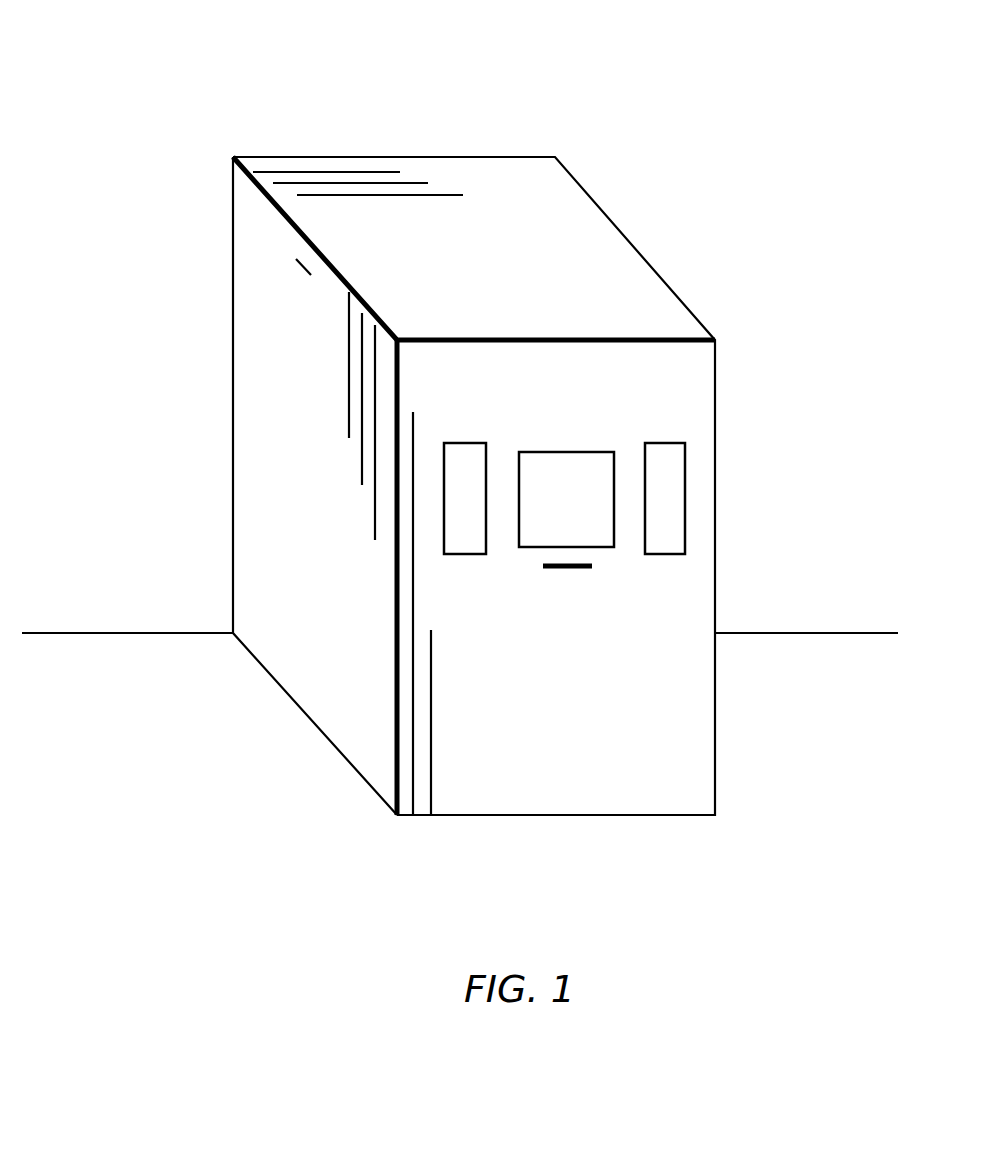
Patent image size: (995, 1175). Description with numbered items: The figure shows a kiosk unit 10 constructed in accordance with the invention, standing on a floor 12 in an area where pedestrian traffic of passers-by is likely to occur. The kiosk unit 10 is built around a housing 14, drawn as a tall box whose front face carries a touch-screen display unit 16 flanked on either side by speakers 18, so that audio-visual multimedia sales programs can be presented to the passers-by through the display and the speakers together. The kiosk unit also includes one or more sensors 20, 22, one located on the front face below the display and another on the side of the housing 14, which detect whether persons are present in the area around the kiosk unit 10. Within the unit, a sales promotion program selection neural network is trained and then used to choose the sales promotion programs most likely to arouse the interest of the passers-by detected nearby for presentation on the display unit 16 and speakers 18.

The kiosk unit 10 is at (136, 142).
The floor 12 is at (194, 701).
The housing 14 is at (472, 178).
The touch-screen display unit 16 is at (600, 452).
The speakers 18 is at (685, 479).
The sensor 20 is at (570, 569).
The sensor 22 is at (296, 264).